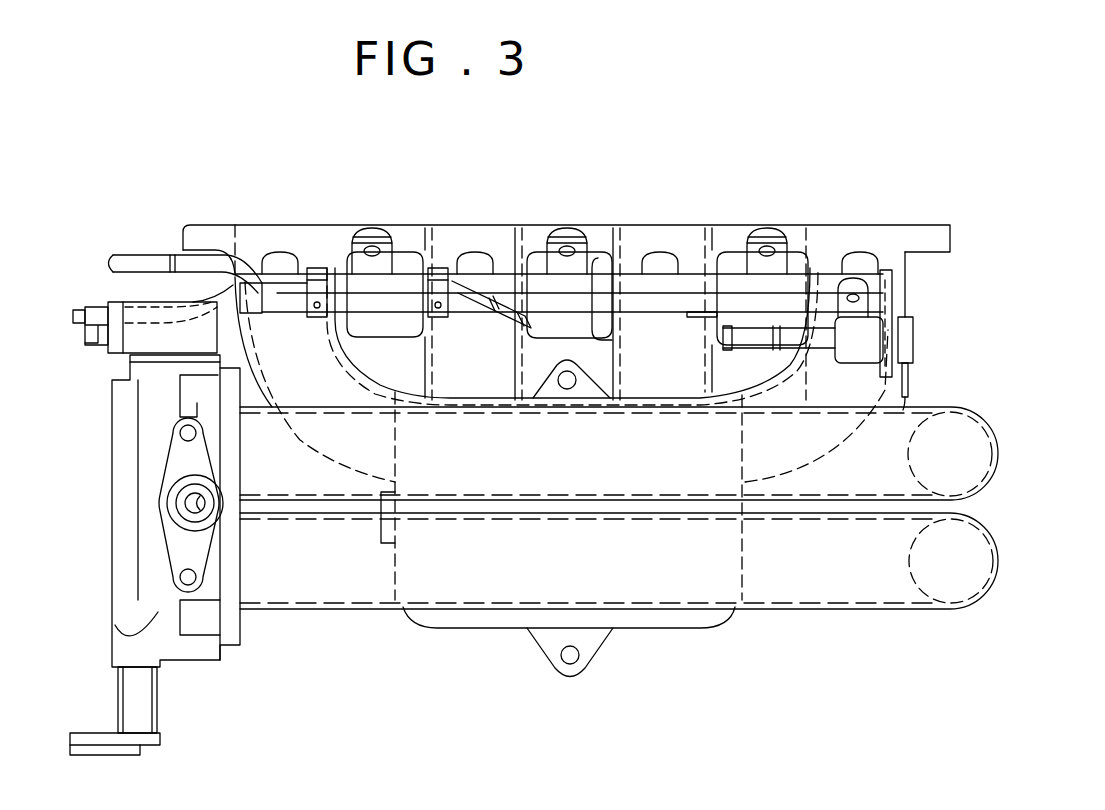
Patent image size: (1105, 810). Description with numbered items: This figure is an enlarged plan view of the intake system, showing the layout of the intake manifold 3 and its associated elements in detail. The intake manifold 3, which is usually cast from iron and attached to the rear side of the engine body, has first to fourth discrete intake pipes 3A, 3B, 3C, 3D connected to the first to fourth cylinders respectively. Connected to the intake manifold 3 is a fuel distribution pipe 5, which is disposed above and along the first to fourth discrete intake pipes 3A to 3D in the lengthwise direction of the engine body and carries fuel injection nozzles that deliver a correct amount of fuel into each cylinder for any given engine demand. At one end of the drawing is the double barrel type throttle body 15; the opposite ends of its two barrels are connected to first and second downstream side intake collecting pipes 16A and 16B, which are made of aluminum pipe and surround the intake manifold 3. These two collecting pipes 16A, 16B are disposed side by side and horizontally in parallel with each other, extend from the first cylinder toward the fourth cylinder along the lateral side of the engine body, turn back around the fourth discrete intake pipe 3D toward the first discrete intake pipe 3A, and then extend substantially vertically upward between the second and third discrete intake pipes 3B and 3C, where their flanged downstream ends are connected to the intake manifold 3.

The intake manifold 3 is at (887, 207).
The first discrete intake pipe 3A is at (357, 317).
The second discrete intake pipe 3B is at (520, 307).
The third discrete intake pipe 3C is at (598, 258).
The fourth discrete intake pipe 3D is at (750, 265).
The fuel distribution pipe 5 is at (785, 307).
The double barrel type throttle body 15 is at (198, 668).
The first downstream side intake collecting pipe 16A is at (998, 452).
The second downstream side intake collecting pipe 16B is at (998, 542).